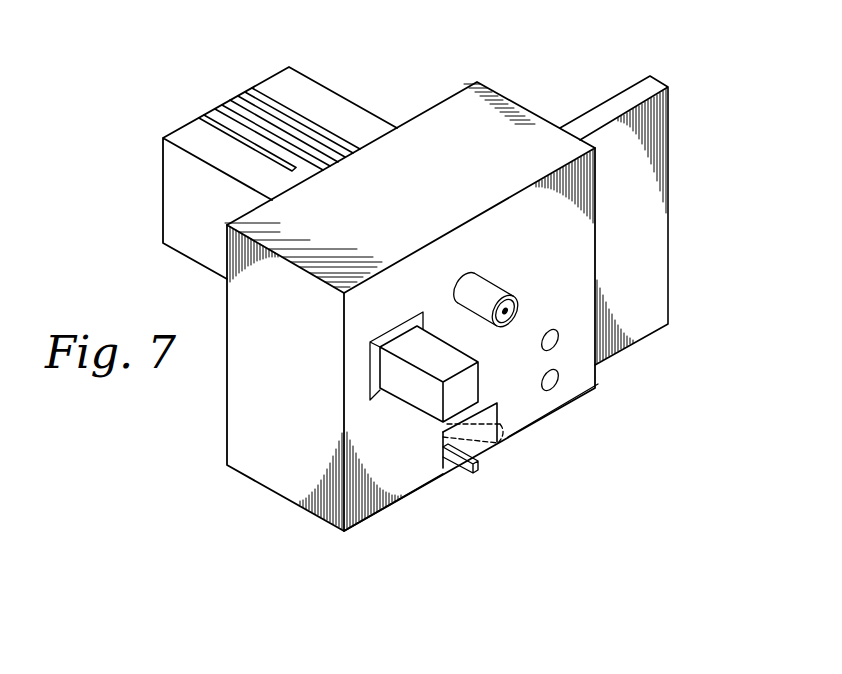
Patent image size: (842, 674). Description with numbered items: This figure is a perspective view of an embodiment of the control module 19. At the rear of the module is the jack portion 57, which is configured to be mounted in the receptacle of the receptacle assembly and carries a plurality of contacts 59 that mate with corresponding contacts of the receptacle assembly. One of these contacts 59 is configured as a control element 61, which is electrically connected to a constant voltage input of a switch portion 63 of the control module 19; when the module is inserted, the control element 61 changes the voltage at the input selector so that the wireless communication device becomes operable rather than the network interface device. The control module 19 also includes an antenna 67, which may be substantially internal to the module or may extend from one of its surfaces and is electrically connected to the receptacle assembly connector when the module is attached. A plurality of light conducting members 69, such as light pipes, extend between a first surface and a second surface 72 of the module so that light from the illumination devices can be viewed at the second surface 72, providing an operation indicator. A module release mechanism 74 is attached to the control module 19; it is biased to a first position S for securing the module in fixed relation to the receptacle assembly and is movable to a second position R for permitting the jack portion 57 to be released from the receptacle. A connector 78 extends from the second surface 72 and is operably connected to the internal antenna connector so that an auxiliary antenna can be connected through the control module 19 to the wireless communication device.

The control module 19 is at (513, 67).
The jack portion 57 is at (176, 183).
The contacts 59 is at (303, 114).
The control element 61 is at (297, 170).
The switch portion 63 is at (417, 398).
The antenna 67 is at (652, 209).
The light conducting members 69 is at (557, 342).
The second surface 72 is at (414, 476).
The module release mechanism 74 is at (479, 466).
The connector 78 is at (492, 281).
The second position R is at (505, 440).
The first position S is at (455, 475).